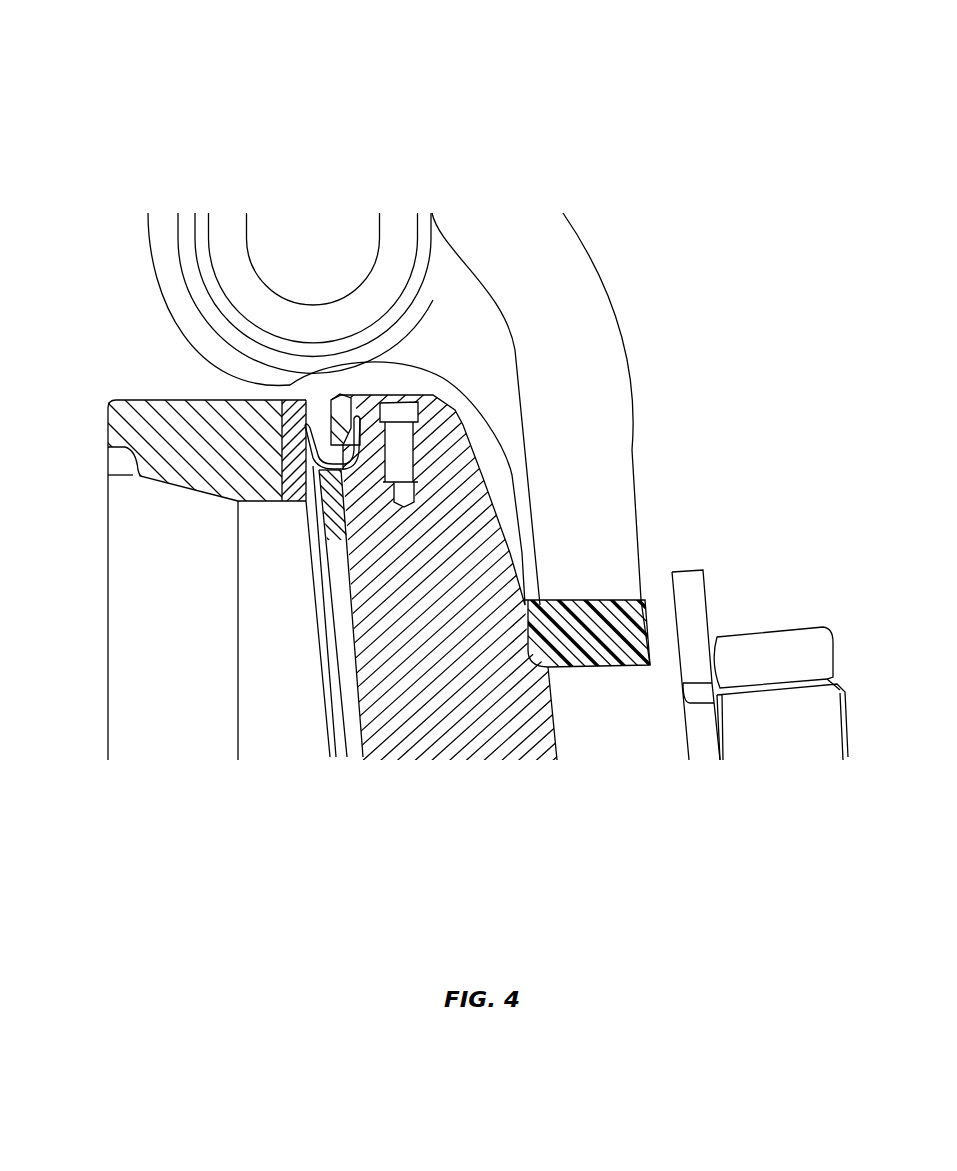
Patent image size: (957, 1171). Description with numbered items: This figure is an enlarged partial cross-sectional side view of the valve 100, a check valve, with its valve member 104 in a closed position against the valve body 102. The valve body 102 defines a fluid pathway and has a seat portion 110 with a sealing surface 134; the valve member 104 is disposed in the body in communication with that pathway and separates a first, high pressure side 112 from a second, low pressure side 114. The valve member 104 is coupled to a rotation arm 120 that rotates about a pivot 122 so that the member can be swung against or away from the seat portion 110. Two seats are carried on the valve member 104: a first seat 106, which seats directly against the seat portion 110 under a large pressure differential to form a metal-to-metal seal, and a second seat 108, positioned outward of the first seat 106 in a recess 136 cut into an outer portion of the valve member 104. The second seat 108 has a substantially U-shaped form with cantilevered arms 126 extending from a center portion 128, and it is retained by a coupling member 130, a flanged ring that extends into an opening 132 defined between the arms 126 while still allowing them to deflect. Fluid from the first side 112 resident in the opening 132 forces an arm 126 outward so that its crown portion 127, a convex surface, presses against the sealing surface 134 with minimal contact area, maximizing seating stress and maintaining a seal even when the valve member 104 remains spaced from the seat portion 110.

The valve 100 is at (233, 70).
The valve body 102 is at (190, 727).
The valve member 104 is at (500, 722).
The first valve seat 106 is at (352, 730).
The second valve seat 108 is at (357, 425).
The seat portion 110 is at (287, 713).
The first side 112 is at (755, 502).
The second side 114 is at (162, 560).
The rotation arm 120 is at (585, 287).
The pivot 122 is at (322, 238).
The arms 126 is at (306, 446).
The crown portion 127 is at (287, 399).
The center portion 128 is at (362, 436).
The coupling member 130 is at (400, 278).
The opening 132 is at (323, 424).
The sealing surface 134 is at (313, 501).
The recess 136 is at (352, 470).